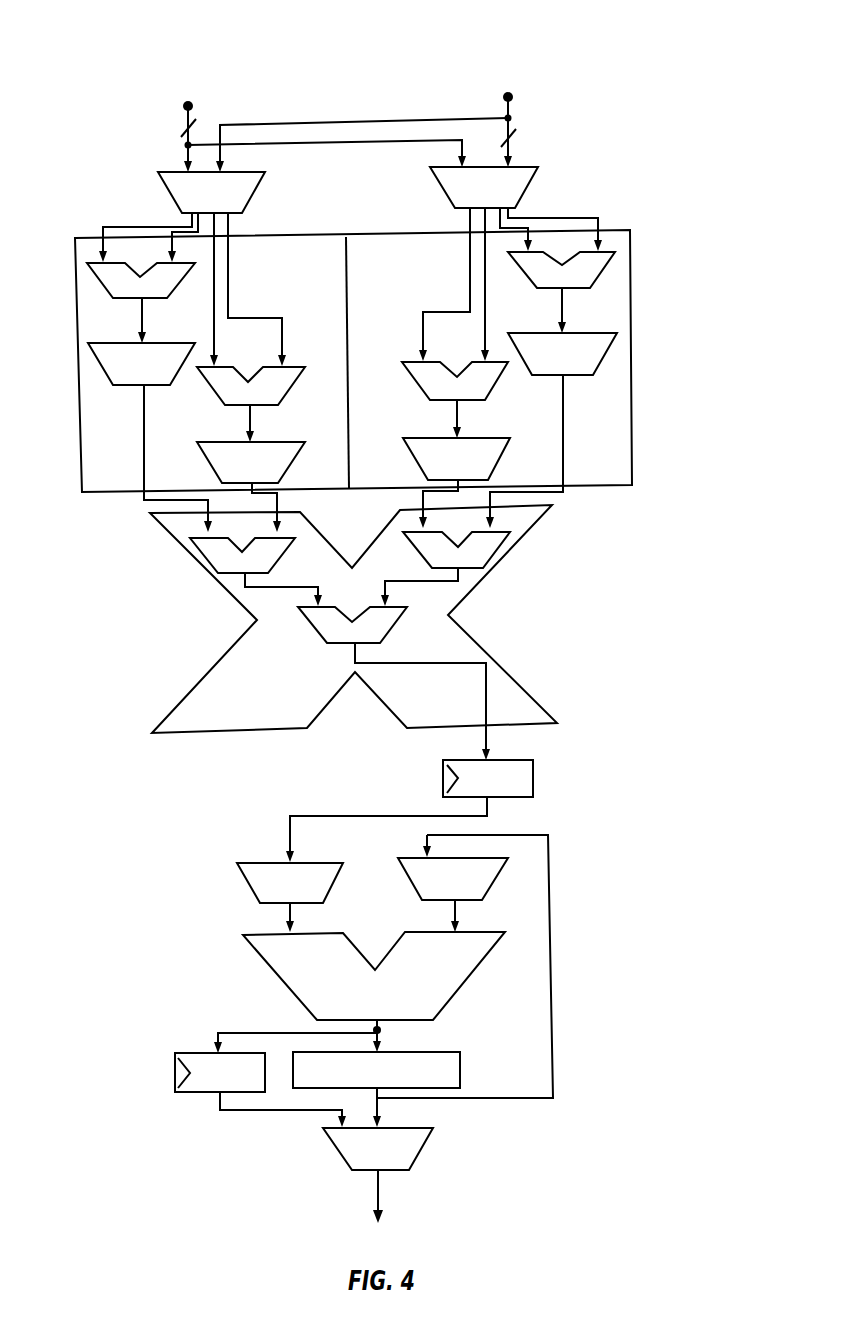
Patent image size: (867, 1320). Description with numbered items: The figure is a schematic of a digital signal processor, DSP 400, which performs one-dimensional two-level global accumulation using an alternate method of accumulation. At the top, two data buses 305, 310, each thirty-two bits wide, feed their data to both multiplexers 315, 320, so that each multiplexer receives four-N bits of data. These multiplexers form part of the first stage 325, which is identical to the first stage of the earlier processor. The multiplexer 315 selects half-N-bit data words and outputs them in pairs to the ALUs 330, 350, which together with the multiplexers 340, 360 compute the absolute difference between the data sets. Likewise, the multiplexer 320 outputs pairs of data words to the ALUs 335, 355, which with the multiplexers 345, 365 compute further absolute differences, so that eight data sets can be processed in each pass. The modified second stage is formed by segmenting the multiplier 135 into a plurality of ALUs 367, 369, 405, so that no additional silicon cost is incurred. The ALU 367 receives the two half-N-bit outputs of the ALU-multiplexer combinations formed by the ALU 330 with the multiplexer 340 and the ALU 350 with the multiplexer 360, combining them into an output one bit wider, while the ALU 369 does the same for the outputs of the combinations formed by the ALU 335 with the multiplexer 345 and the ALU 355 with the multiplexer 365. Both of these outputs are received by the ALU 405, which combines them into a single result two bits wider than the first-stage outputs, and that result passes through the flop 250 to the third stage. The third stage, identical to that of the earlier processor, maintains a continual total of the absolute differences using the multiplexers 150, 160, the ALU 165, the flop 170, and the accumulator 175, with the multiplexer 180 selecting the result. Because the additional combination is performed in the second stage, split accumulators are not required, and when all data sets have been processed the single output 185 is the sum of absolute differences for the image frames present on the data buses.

The DSP 400 is at (666, 38).
The data bus 305 is at (179, 88).
The data bus 310 is at (517, 70).
The multiplexer 315 is at (168, 195).
The multiplexer 320 is at (528, 186).
The first stage 325 is at (78, 440).
The ALU 330 is at (101, 280).
The ALU 335 is at (603, 270).
The multiplexer 340 is at (101, 365).
The multiplexer 345 is at (607, 353).
The ALU 350 is at (280, 406).
The ALU 355 is at (430, 402).
The multiplexer 360 is at (226, 441).
The multiplexer 365 is at (488, 437).
The ALU 367 is at (202, 556).
The ALU 369 is at (497, 548).
The ALU 405 is at (325, 636).
The multiplier 135 is at (477, 643).
The flop 250 is at (535, 775).
The multiplexer 150 is at (241, 884).
The multiplexer 160 is at (405, 880).
The ALU 165 is at (275, 977).
The flop 170 is at (173, 1072).
The accumulator 175 is at (462, 1065).
The multiplexer 180 is at (331, 1152).
The output 185 is at (374, 1195).